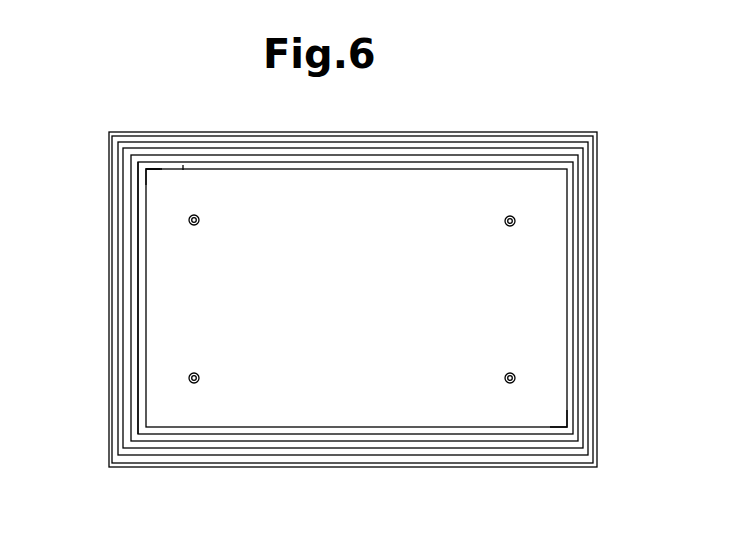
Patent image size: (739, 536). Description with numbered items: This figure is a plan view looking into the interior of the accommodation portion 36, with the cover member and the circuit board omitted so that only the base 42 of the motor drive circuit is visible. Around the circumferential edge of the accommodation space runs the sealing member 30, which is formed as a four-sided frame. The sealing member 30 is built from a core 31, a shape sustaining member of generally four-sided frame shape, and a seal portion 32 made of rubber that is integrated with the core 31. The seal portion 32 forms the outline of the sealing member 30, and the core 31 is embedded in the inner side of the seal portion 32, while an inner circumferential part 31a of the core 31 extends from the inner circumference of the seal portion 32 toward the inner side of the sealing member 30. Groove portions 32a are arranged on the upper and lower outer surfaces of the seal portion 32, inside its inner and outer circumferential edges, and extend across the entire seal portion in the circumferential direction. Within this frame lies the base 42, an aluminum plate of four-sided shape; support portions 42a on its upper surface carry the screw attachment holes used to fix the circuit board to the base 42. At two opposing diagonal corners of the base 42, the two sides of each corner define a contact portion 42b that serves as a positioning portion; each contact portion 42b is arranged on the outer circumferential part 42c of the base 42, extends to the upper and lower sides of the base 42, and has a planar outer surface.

The sealing member 30 is at (354, 298).
The core 31 is at (140, 281).
The inner circumferential part 31a is at (138, 236).
The seal portion 32 is at (132, 306).
The groove portion 32a is at (122, 263).
The accommodation portion 36 is at (598, 132).
The base 42 is at (355, 301).
The support portion 42a is at (200, 220).
The contact portion 42b is at (150, 182).
The outer circumferential part 42c is at (154, 170).